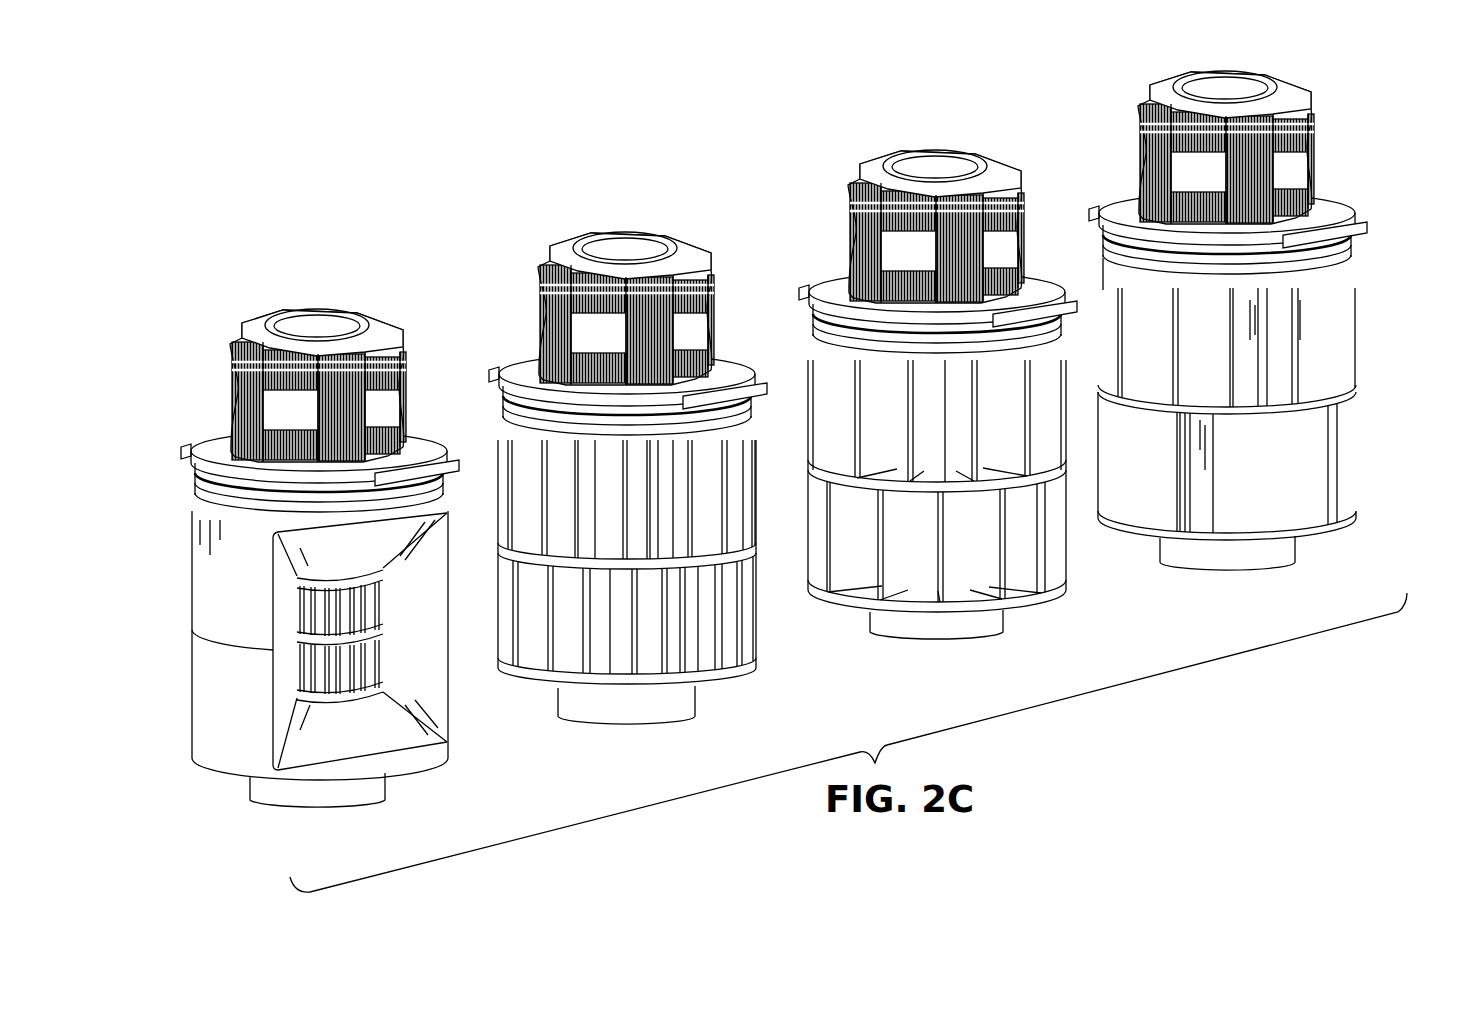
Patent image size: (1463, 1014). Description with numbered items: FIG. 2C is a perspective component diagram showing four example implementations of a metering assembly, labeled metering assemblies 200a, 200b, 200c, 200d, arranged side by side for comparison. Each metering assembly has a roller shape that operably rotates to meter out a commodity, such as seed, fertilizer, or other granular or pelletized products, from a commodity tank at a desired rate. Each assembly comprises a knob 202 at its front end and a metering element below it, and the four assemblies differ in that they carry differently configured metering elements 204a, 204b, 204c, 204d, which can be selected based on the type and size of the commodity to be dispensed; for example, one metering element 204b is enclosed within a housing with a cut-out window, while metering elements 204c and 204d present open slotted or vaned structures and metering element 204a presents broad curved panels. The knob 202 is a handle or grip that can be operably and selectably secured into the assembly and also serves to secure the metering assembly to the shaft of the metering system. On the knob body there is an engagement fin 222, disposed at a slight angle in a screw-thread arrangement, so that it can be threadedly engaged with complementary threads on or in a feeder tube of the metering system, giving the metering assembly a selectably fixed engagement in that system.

The metering assembly 200a is at (1327, 110).
The metering assembly 200b is at (205, 362).
The metering assembly 200c is at (703, 715).
The metering assembly 200d is at (975, 643).
The knob 202 is at (266, 352).
The engagement fin 222 is at (425, 474).
The metering element 204a is at (1372, 367).
The metering element 204b is at (312, 596).
The metering element 204c is at (620, 672).
The metering element 204d is at (1020, 600).